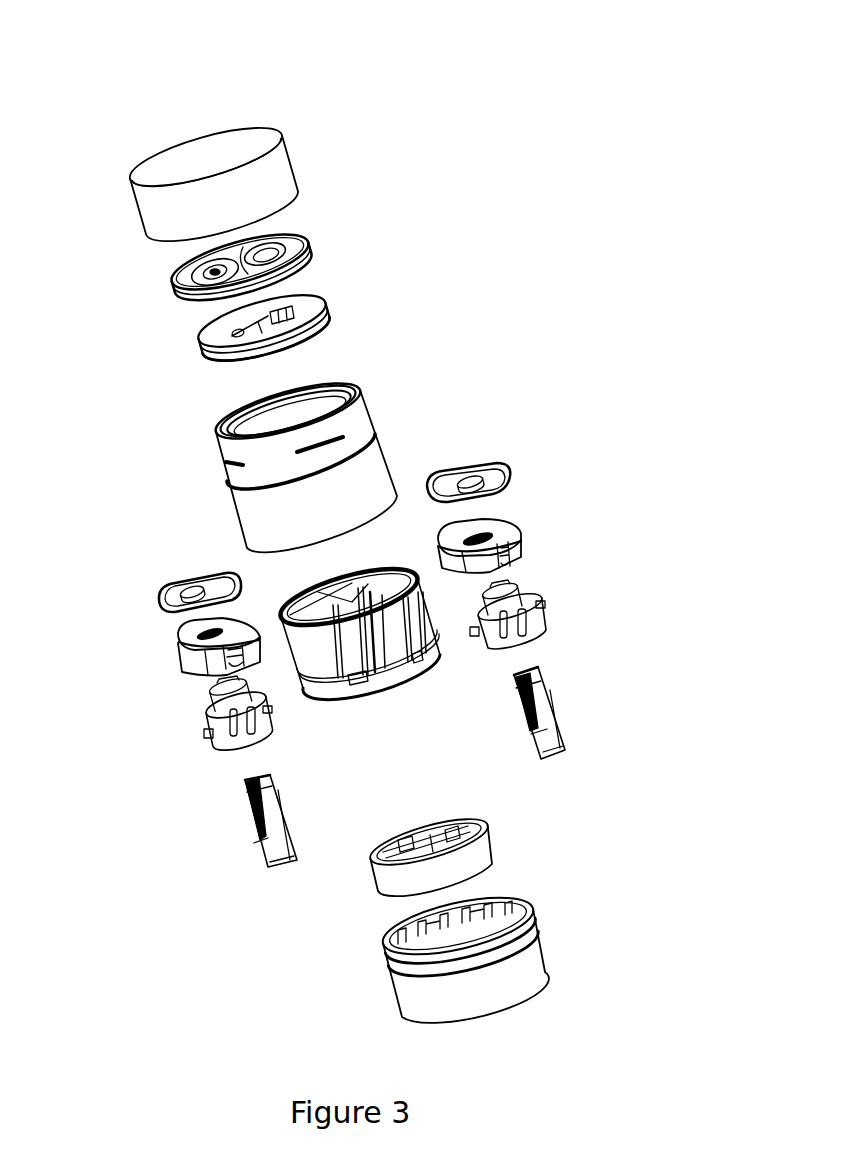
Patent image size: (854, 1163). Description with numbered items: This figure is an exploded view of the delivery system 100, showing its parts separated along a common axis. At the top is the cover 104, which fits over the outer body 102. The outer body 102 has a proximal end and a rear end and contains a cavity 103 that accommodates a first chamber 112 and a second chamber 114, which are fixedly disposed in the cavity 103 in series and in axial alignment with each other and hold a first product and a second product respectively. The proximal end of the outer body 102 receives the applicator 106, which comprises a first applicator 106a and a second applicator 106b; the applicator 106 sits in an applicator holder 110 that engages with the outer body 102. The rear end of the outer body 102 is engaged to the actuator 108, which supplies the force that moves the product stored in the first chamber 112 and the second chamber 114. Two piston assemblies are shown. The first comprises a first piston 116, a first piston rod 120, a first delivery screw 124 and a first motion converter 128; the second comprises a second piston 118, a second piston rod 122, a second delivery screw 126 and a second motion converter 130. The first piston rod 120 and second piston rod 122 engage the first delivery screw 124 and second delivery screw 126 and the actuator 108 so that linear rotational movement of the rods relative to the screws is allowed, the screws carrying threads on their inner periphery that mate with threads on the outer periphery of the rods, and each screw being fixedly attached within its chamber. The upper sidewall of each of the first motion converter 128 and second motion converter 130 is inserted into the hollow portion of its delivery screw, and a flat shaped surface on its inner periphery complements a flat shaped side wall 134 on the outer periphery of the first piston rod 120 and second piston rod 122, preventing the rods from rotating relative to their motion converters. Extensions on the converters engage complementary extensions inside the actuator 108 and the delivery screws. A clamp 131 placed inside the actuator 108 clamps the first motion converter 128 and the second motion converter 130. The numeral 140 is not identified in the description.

The delivery system 100 is at (104, 80).
The outer body 102 is at (373, 428).
The cavity 103 is at (295, 415).
The cover 104 is at (289, 143).
The applicator 106 is at (325, 242).
The first applicator 106a is at (172, 270).
The second applicator 106b is at (300, 240).
The actuator 108 is at (542, 937).
The applicator holder 110 is at (322, 296).
The first chamber 112 is at (325, 653).
The second chamber 114 is at (407, 633).
The first piston 116 is at (187, 577).
The second piston 118 is at (482, 465).
The first piston rod 120 is at (252, 815).
The second piston rod 122 is at (550, 702).
The first delivery screw 124 is at (173, 653).
The second delivery screw 126 is at (522, 540).
The first motion converter 128 is at (207, 725).
The second motion converter 130 is at (545, 613).
The clamp 131 is at (487, 832).
The flat shaped side wall 134 is at (530, 690).
The clip 140 is at (523, 548).